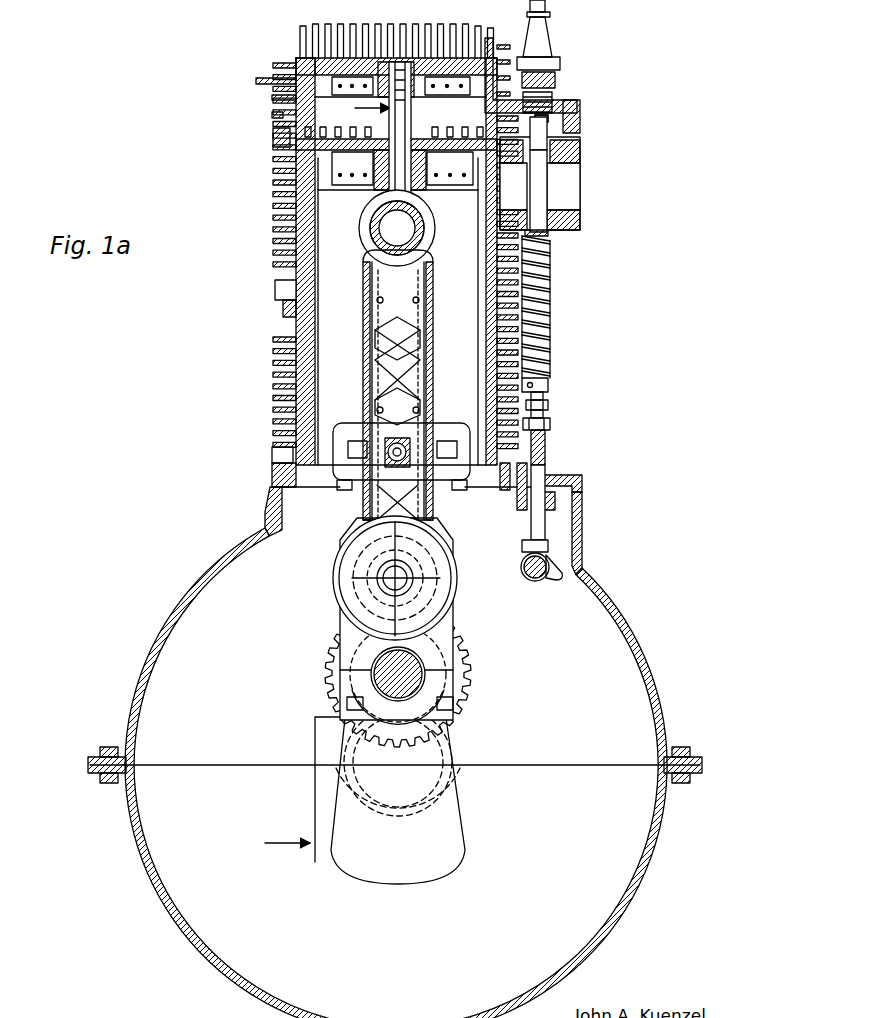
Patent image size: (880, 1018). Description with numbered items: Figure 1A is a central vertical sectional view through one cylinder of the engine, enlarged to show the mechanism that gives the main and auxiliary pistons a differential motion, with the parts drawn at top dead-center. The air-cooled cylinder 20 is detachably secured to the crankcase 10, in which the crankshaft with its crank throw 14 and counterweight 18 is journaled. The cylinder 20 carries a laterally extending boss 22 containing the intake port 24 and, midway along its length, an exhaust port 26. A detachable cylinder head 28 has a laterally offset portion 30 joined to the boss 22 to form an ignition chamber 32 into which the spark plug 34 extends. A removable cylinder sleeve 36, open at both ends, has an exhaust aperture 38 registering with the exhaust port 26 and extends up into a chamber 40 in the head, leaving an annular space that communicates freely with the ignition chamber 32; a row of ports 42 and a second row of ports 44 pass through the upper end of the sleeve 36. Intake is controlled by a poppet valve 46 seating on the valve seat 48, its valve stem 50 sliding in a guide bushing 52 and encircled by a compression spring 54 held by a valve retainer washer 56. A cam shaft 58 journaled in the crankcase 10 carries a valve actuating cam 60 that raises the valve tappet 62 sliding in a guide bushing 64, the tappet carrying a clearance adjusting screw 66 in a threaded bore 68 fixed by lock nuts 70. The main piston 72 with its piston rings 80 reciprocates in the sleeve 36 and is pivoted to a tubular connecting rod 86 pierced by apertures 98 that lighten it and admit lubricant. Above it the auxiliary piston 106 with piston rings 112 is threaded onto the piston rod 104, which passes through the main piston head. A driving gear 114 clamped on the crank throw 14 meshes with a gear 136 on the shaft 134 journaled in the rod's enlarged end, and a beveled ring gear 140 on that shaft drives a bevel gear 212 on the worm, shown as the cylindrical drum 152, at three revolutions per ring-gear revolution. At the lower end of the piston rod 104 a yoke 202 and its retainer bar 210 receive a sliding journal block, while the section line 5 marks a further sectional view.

The crankcase 10 is at (642, 633).
The crank throw 14 is at (406, 668).
The counterweight 18 is at (449, 852).
The cylinder 20 is at (268, 189).
The laterally extending boss 22 is at (549, 239).
The intake port 24 is at (584, 188).
The exhaust port 26 is at (291, 300).
The cylinder head 28 is at (305, 62).
The laterally offset portion 30 is at (572, 103).
The ignition chamber 32 is at (550, 119).
The spark plug 34 is at (546, 45).
The cylinder sleeve 36 is at (291, 362).
The exhaust aperture 38 is at (286, 311).
The chamber 40 is at (300, 88).
The ports 42 is at (497, 62).
The ports 44 is at (495, 143).
The poppet valve 46 is at (540, 150).
The valve seat 48 is at (572, 151).
The valve stem 50 is at (541, 198).
The guide bushing 52 is at (576, 224).
The compression spring 54 is at (550, 310).
The valve retainer washer 56 is at (548, 386).
The cam shaft 58 is at (530, 580).
The valve actuating cam 60 is at (555, 580).
The valve tappet 62 is at (531, 531).
The guide bushing 64 is at (560, 481).
The clearance adjusting screw 66 is at (548, 408).
The threaded bore 68 is at (542, 456).
The lock nuts 70 is at (550, 425).
The main piston 72 is at (459, 160).
The piston rings 80 is at (322, 180).
The connecting rod 86 is at (431, 350).
The apertures 98 is at (366, 345).
The piston rod 104 is at (403, 128).
The auxiliary piston 106 is at (452, 66).
The piston rings 112 is at (312, 62).
The driving gear 114 is at (337, 676).
The shaft 134 is at (384, 580).
The gear 136 is at (370, 576).
The beveled ring gear 140 is at (452, 576).
The cylindrical drum 152 is at (406, 400).
The yoke 202 is at (441, 436).
The retainer bar 210 is at (356, 472).
The bevel gear 212 is at (421, 521).
The section line 5 is at (319, 480).